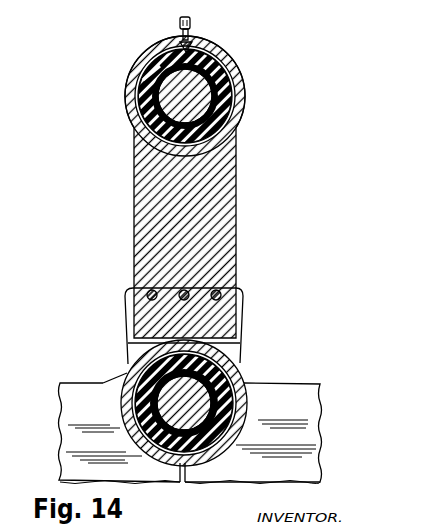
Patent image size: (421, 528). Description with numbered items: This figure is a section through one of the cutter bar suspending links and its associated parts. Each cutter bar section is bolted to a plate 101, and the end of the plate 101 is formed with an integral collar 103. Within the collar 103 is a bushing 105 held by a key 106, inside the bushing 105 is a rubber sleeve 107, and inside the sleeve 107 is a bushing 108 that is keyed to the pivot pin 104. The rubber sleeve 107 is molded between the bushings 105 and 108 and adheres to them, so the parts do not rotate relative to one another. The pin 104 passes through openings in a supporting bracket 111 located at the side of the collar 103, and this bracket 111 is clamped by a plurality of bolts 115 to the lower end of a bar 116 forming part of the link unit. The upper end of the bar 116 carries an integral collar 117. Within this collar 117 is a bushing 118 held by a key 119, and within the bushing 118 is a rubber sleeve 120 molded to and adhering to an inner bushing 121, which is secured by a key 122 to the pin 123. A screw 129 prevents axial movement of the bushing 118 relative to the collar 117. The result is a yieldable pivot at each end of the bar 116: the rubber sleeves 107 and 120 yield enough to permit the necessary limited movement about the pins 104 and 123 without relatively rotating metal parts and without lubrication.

The plate 101 is at (90, 392).
The collar 103 is at (129, 373).
The pivot pin 104 is at (230, 392).
The bushing 105 is at (232, 409).
The key 106 is at (225, 343).
The rubber sleeve 107 is at (232, 437).
The bushing 108 is at (125, 421).
The supporting bracket 111 is at (127, 317).
The bolts 115 is at (147, 294).
The bar 116 is at (228, 167).
The collar 117 is at (218, 52).
The bushing 118 is at (235, 97).
The key 119 is at (183, 41).
The rubber sleeve 120 is at (233, 115).
The bushing 121 is at (246, 75).
The key 122 is at (163, 62).
The pin 123 is at (140, 89).
The screw 129 is at (191, 23).